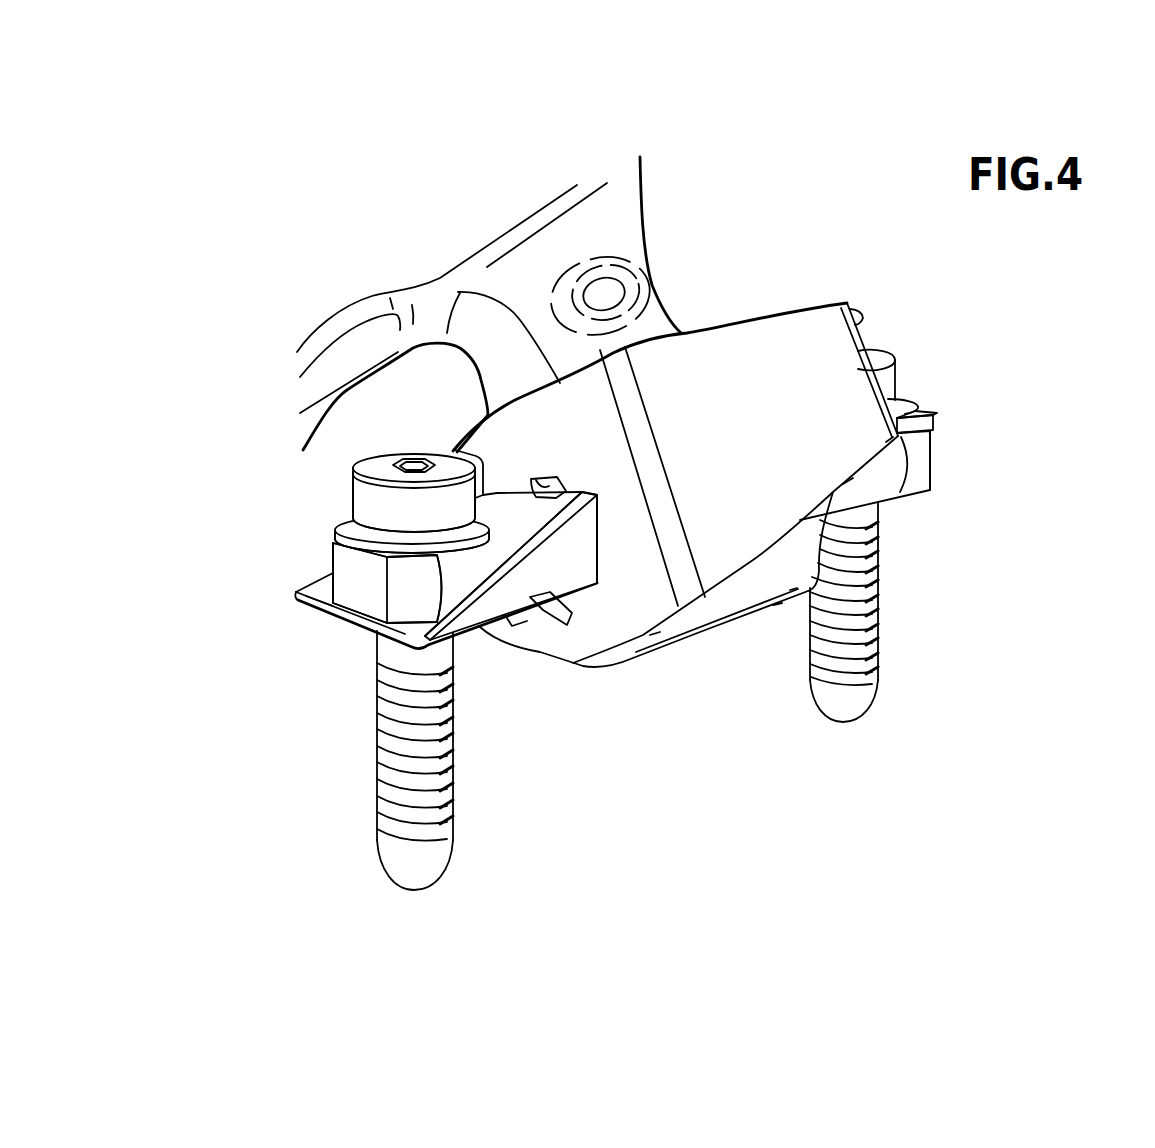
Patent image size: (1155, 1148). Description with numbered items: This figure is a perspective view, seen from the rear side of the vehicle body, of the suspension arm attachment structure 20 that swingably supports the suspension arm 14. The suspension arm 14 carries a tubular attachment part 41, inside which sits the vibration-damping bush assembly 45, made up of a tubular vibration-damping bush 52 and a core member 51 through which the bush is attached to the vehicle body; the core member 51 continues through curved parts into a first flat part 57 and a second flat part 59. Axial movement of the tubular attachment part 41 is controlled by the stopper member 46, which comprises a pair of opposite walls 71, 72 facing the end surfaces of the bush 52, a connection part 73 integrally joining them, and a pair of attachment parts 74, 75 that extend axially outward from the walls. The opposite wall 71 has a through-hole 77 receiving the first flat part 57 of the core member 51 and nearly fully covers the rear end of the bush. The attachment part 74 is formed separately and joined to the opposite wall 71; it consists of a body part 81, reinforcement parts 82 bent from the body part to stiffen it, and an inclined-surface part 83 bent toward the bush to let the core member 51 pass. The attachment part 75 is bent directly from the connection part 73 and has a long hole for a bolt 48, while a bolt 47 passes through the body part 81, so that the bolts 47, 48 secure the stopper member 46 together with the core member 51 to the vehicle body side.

The suspension arm 14 is at (444, 249).
The suspension arm attachment structure 20 is at (205, 196).
The tubular attachment part 41 is at (720, 610).
The vibration-damping bush assembly 45 is at (1075, 493).
The stopper member 46 is at (789, 298).
The bolt 47 is at (362, 495).
The bolt 48 is at (877, 351).
The core member 51 is at (939, 464).
The vibration-damping bush 52 is at (859, 528).
The first flat part 57 is at (353, 593).
The second flat part 59 is at (918, 474).
The opposite wall 71 is at (523, 423).
The opposite wall 72 is at (860, 323).
The connection part 73 is at (730, 347).
The attachment part 74 is at (471, 646).
The attachment part 75 is at (917, 398).
The through-hole 77 is at (537, 477).
The body part 81 is at (357, 620).
The reinforcement part 82 is at (457, 450).
The inclined-surface part 83 is at (533, 598).